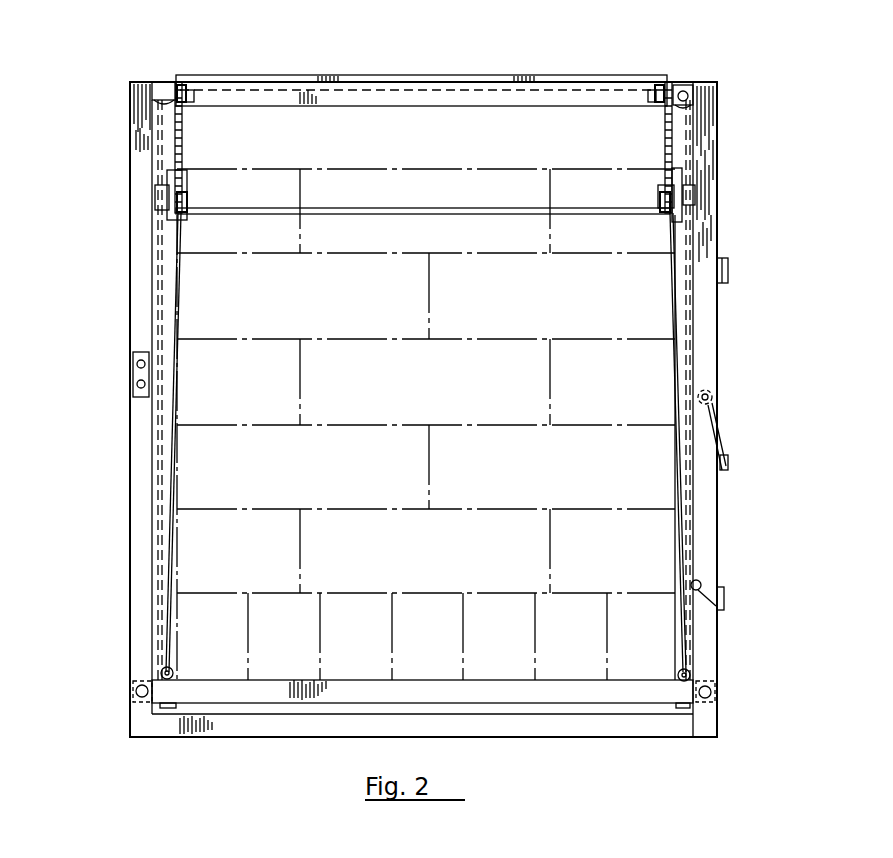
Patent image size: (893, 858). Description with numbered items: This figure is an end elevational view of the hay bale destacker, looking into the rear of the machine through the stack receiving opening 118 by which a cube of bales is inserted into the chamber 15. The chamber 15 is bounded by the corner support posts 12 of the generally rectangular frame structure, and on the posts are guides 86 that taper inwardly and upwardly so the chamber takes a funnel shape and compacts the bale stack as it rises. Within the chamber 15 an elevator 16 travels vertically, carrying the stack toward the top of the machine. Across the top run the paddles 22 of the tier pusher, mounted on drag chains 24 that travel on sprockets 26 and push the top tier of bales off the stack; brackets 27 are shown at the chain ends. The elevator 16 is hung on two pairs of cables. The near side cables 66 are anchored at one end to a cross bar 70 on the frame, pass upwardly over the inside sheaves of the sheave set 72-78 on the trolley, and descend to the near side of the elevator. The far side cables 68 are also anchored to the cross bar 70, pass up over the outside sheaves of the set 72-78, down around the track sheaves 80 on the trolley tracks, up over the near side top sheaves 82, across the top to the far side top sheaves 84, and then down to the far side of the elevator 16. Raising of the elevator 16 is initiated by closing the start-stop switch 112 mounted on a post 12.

The corner support post 12 is at (130, 491).
The chamber 15 is at (386, 331).
The elevator 16 is at (573, 688).
The paddle 22 is at (493, 77).
The drag chain 24 is at (183, 140).
The sprocket 26 is at (181, 86).
The roller bracket 27 is at (194, 88).
The near side cable 66 is at (688, 649).
The far side cable 68 is at (354, 90).
The cross bar 70 is at (719, 475).
The inside and outside sheaves 72-78 is at (713, 398).
The track sheave 80 is at (712, 583).
The near side top sheave 82 is at (684, 92).
The far side top sheave 84 is at (160, 86).
The guide 86 is at (178, 290).
The start-stop switch 112 is at (134, 373).
The stack receiving opening 118 is at (388, 475).